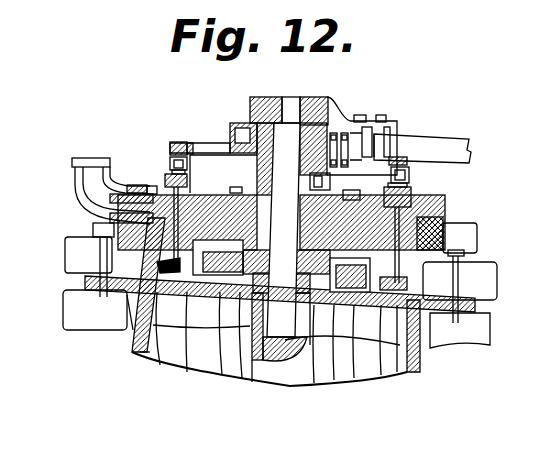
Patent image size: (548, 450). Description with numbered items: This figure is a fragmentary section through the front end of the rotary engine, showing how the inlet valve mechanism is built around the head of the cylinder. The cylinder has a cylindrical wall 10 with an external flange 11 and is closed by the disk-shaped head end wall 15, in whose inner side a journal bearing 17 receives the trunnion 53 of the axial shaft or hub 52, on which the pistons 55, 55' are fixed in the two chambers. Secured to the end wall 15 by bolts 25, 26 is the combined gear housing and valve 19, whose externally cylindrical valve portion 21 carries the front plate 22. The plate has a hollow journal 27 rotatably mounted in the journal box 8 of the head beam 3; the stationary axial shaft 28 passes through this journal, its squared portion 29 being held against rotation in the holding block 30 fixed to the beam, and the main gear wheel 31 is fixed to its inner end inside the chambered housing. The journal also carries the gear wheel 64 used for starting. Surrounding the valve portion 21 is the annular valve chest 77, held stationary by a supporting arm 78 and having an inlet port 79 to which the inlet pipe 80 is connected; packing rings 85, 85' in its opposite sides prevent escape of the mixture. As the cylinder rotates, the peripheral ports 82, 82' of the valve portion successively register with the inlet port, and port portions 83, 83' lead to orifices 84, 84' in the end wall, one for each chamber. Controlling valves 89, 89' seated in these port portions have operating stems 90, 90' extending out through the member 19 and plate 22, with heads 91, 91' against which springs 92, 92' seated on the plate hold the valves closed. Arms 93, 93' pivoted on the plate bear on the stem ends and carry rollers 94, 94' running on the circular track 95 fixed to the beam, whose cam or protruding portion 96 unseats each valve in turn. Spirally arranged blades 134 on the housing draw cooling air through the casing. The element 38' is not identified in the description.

The head beam 3 is at (233, 123).
The journal box 8 is at (330, 112).
The cylindrical wall 10 is at (157, 348).
The external flange 11 is at (90, 280).
The head end wall 15 is at (220, 358).
The journal bearing 17 is at (334, 385).
The combined gear housing and valve 19 is at (238, 362).
The valve portion 21 is at (152, 186).
The front plate 22 is at (443, 212).
The securing bolt 25 is at (235, 187).
The securing bolt 26 is at (100, 258).
The hollow journal 27 is at (318, 99).
The axial shaft 28 is at (328, 200).
The squared portion 29 is at (289, 103).
The holding block 30 is at (267, 97).
The main gear wheel 31 is at (354, 385).
The rib 38' is at (170, 357).
The axial shaft or hub 52 is at (294, 386).
The trunnion 53 is at (294, 355).
The piston 55 is at (257, 394).
The piston 55' is at (307, 358).
The gear wheel 64 is at (324, 182).
The annular valve chest 77 is at (470, 223).
The supporting arm 78 is at (470, 249).
The inlet port 79 is at (128, 318).
The inlet pipe 80 is at (76, 190).
The port 82 is at (136, 325).
The port 82' is at (412, 337).
The port portion 83 is at (217, 280).
The port portion 83' is at (357, 313).
The orifice 84 is at (171, 340).
The orifice 84' is at (379, 358).
The packing ring 85 is at (120, 168).
The packing ring 85' is at (92, 325).
The controlling valve 89 is at (124, 387).
The controlling valve 89' is at (404, 364).
The operating stem 90 is at (104, 213).
The operating stem 90' is at (475, 284).
The head 91 is at (193, 170).
The head 91' is at (431, 183).
The spring 92 is at (163, 209).
The spring 92' is at (442, 228).
The arm 93 is at (162, 146).
The arm 93' is at (419, 173).
The roller 94 is at (180, 135).
The roller 94' is at (415, 137).
The circular track 95 is at (388, 157).
The cam or protruding portion 96 is at (191, 143).
The spirally arranged blades 134 is at (472, 318).